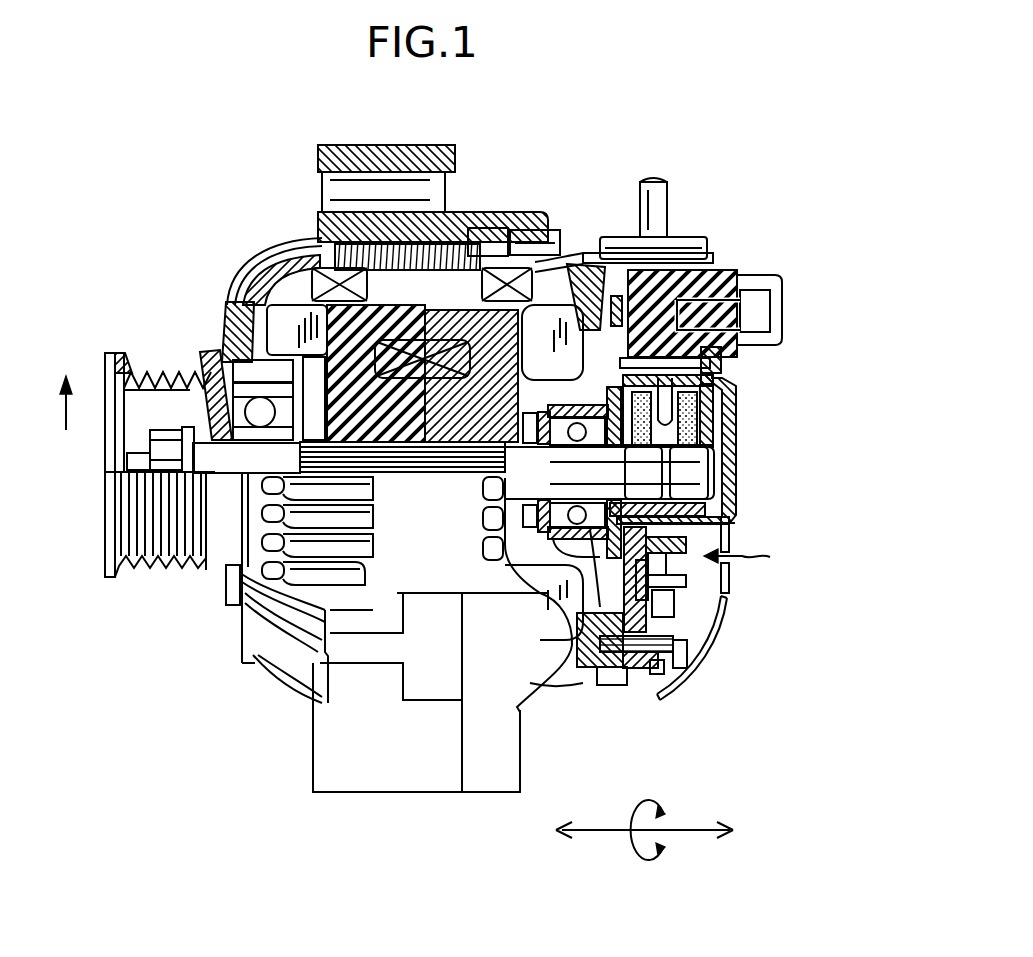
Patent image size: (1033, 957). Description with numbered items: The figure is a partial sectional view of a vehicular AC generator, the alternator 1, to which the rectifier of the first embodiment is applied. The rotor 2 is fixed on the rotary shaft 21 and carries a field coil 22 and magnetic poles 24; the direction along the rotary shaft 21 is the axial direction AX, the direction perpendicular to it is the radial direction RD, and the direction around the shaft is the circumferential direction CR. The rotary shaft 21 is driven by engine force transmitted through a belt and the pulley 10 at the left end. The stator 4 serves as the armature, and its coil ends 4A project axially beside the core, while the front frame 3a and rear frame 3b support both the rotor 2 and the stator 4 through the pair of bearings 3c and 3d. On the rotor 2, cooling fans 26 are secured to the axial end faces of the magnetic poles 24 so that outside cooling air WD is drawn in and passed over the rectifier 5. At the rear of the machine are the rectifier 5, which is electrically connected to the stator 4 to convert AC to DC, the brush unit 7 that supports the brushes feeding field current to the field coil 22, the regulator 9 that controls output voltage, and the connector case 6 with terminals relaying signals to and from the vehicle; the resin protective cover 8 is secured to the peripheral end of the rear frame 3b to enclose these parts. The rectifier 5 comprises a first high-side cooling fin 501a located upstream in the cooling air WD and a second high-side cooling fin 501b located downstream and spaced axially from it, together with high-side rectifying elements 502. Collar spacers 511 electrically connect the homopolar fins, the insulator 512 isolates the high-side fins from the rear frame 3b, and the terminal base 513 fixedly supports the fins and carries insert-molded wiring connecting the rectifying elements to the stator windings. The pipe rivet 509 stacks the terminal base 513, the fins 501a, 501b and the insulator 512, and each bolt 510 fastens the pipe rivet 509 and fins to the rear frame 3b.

The alternator 1 is at (652, 145).
The rotor 2 is at (403, 310).
The front frame 3a is at (386, 793).
The rear frame 3b is at (490, 793).
The bearing 3c is at (232, 363).
The bearing 3d is at (683, 487).
The stator 4 is at (486, 330).
The stator coil end 4A is at (322, 284).
The rectifier 5 is at (681, 646).
The connector case 6 is at (768, 270).
The brush unit 7 is at (735, 414).
The protective cover 8 is at (735, 448).
The regulator 9 is at (722, 373).
The pulley 10 is at (108, 578).
The rotary shaft 21 is at (153, 387).
The field coil 22 is at (425, 345).
The magnetic poles 24 is at (490, 330).
The cooling fans 26 is at (541, 312).
The first high-side cooling fin 501a is at (662, 582).
The second high-side cooling fin 501b is at (660, 602).
The high-side rectifying elements 502 is at (662, 622).
The pipe rivet 509 is at (620, 678).
The bolts 510 is at (687, 668).
The collar spacers 511 is at (662, 574).
The insulator 512 is at (653, 675).
The terminal base 513 is at (733, 523).
The radial directions RD is at (68, 390).
The cooling air WD is at (758, 555).
The axial direction AX is at (644, 819).
The circumferential direction CR is at (651, 846).